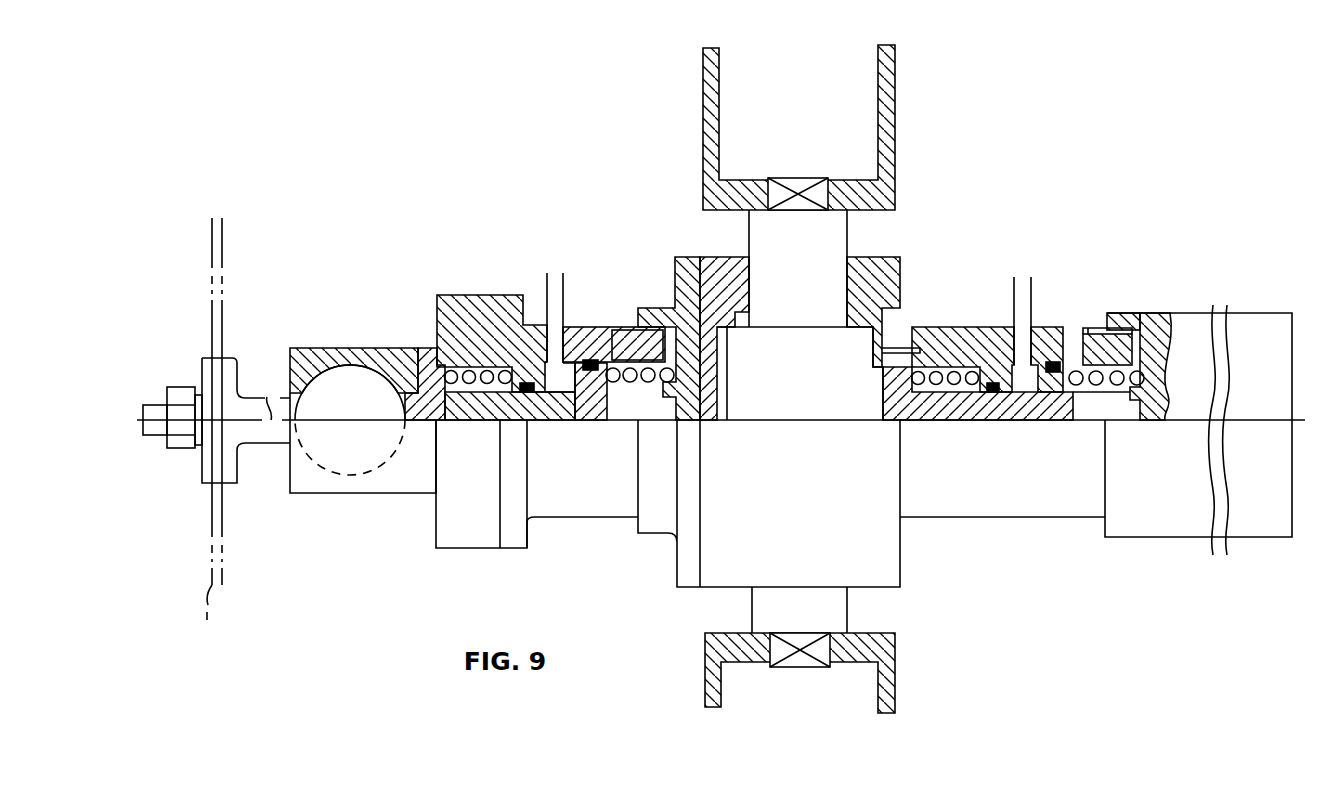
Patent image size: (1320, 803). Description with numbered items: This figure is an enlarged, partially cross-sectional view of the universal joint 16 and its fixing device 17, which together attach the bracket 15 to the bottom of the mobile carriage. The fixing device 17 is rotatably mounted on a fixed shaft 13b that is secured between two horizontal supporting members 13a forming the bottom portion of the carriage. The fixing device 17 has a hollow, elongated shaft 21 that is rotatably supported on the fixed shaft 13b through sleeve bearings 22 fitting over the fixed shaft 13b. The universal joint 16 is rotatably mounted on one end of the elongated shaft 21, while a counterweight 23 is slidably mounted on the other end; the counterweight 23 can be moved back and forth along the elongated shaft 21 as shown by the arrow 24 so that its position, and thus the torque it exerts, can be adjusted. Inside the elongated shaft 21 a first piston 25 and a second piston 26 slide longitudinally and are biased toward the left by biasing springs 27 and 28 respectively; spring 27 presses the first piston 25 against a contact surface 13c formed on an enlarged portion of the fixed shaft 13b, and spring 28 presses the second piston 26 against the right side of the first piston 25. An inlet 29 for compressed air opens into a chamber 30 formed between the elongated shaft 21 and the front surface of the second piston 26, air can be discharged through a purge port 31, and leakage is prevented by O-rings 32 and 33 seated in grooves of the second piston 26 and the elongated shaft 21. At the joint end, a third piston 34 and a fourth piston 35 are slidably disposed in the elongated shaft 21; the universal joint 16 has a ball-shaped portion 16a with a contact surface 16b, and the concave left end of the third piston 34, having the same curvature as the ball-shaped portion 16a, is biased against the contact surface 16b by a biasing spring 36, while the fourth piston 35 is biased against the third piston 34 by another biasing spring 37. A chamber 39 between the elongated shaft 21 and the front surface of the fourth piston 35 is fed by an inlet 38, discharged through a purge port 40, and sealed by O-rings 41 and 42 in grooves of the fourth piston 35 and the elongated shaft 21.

The horizontal supporting members 13a is at (866, 72).
The fixed shaft 13b is at (838, 228).
The contact surface 13c is at (862, 421).
The bracket 15 is at (214, 435).
The universal joint 16 is at (273, 463).
The ball-shaped portion 16a is at (342, 380).
The contact surface 16b is at (395, 420).
The fixing device 17 is at (933, 240).
The elongated shaft 21 is at (961, 518).
The sleeve bearings 22 is at (855, 252).
The counterweight 23 is at (1250, 525).
The arrow 24 is at (1300, 442).
The first piston 25 is at (902, 423).
The second piston 26 is at (1020, 421).
The biasing spring 27 is at (935, 371).
The biasing spring 28 is at (1096, 370).
The inlet 29 is at (1022, 275).
The chamber 30 is at (1012, 365).
The purge port 31 is at (1080, 363).
The O-ring 32 is at (1072, 421).
The O-ring 33 is at (998, 394).
The third piston 34 is at (430, 370).
The fourth piston 35 is at (476, 418).
The biasing spring 36 is at (472, 366).
The biasing spring 37 is at (630, 368).
The inlet 38 is at (558, 286).
The chamber 39 is at (562, 382).
The purge port 40 is at (615, 362).
The O-ring 41 is at (593, 383).
The O-ring 42 is at (532, 385).